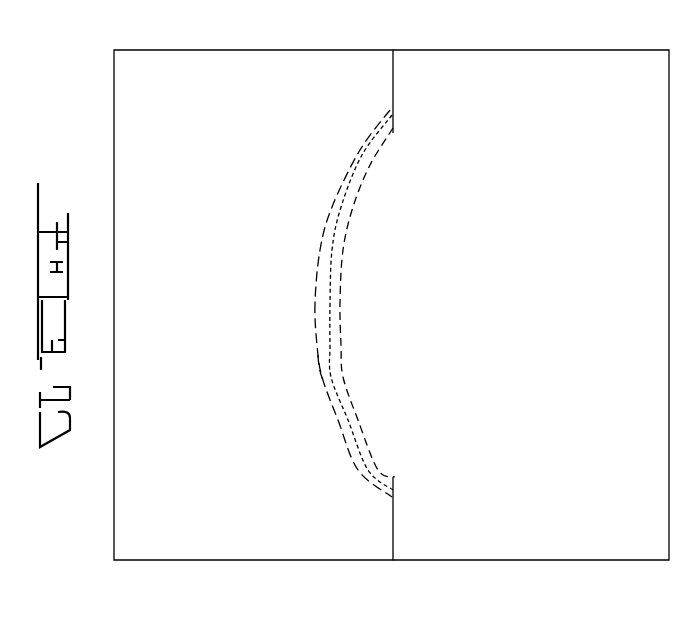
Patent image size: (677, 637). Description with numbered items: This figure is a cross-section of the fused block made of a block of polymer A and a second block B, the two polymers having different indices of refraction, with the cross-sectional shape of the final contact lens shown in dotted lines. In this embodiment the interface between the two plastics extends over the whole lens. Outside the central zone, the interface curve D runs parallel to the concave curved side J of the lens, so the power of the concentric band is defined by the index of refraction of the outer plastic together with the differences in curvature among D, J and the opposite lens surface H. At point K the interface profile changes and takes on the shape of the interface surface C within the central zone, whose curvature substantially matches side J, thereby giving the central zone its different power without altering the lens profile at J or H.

The block of polymer A is at (254, 305).
The block B is at (531, 305).
The interface surface C is at (331, 303).
The interface profile (curve) D is at (338, 192).
The lens surface H is at (362, 467).
The concave curved side of the contact lens J is at (368, 421).
The point where interface profile changes K is at (327, 381).